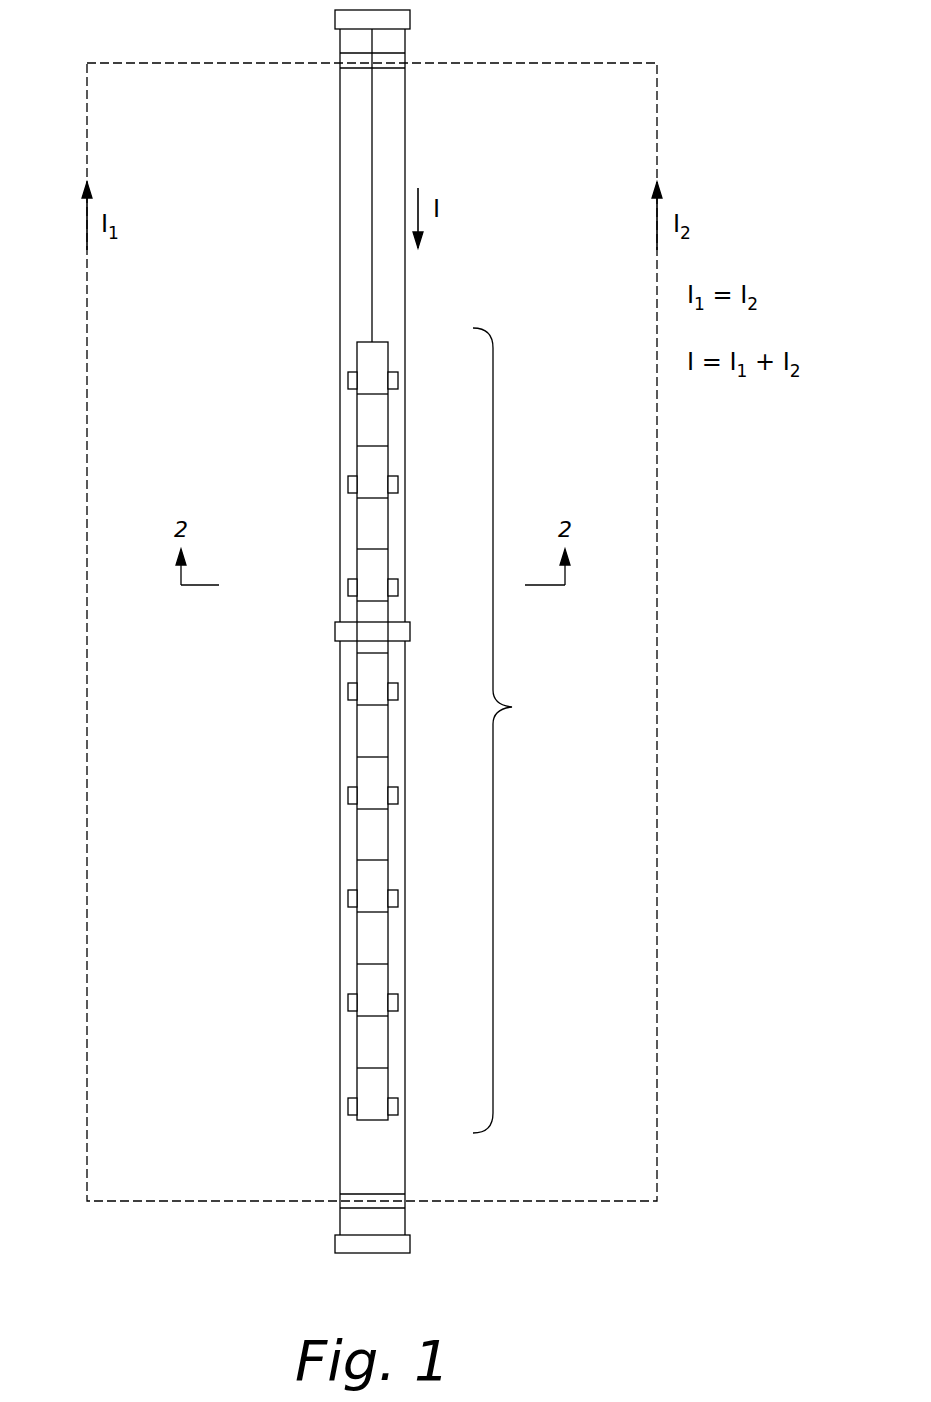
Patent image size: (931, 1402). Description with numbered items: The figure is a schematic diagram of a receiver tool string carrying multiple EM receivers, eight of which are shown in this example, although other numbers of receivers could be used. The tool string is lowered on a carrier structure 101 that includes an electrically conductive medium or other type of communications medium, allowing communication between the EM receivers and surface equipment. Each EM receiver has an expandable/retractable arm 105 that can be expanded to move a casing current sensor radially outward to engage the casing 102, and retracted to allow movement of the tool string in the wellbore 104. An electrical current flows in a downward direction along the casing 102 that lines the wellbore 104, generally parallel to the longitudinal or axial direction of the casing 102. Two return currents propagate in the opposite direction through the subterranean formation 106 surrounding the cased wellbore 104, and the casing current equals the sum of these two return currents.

The carrier structure 101 is at (372, 167).
The casing 102 is at (461, 730).
The wellbore 104 is at (340, 1162).
The expandable/retractable arm 105 is at (348, 380).
The subterranean formation 106 is at (751, 636).